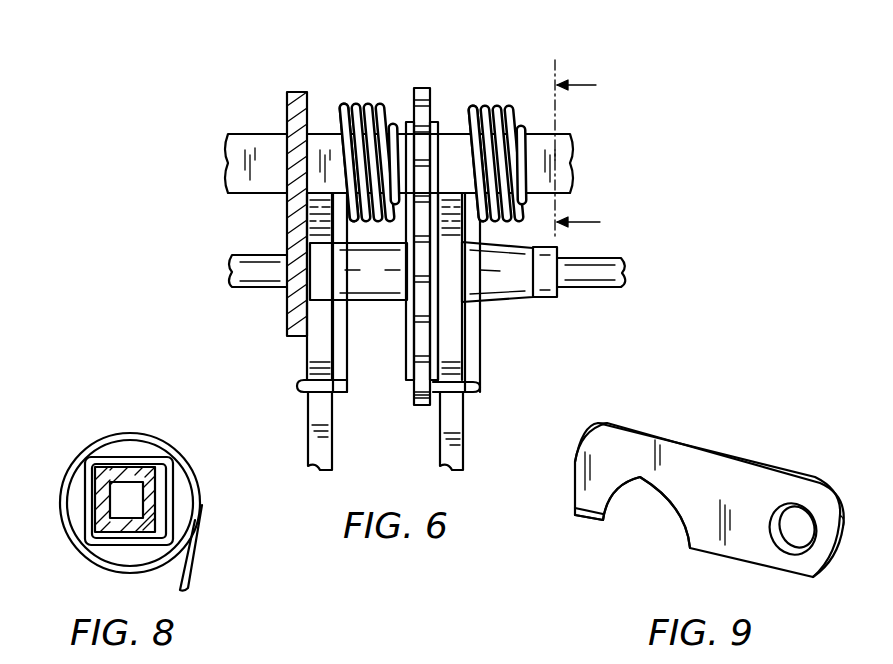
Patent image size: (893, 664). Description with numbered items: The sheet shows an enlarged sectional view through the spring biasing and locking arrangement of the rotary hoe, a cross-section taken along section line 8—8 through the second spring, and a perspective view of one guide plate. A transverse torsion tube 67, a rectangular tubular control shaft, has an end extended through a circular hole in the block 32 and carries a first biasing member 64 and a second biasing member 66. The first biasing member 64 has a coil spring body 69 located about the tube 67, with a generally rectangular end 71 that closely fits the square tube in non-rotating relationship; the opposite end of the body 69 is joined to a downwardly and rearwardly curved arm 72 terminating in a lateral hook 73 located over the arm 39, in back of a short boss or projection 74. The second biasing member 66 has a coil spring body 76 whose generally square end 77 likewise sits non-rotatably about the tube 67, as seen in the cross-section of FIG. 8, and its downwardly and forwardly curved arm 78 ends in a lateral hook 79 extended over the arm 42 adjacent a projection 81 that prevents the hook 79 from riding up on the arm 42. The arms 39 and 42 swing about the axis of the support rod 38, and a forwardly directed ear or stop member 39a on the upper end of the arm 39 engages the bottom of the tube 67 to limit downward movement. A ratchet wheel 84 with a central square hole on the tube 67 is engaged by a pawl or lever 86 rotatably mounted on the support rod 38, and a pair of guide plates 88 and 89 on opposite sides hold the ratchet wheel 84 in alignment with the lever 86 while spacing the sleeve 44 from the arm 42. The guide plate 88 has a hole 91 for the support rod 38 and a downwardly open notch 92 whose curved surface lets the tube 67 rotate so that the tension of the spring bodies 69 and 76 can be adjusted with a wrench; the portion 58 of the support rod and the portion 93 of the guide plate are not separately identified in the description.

In FIG. 6, the section line 8— 8 is at (584, 149).
In FIG. 6, the block 32 is at (295, 100).
In FIG. 6, the support rod 38 is at (592, 272).
In FIG. 6, the arm 39 is at (322, 438).
In FIG. 6, the ear or stop member 39a is at (312, 213).
In FIG. 6, the arm 42 is at (448, 436).
In FIG. 6, the sleeve 44 is at (374, 276).
In FIG. 6, the tapered portion 58 is at (500, 276).
In FIG. 6, the first biasing member 64 is at (360, 92).
In FIG. 6, the second biasing member 66 is at (490, 92).
In FIG. 6, the torsion tube 67 is at (248, 158).
In FIG. 8, the torsion tube 67 is at (113, 480).
In FIG. 6, the coil spring body 69 is at (344, 104).
In FIG. 6, the end of coil spring body 71 is at (393, 110).
In FIG. 6, the arm 72 is at (342, 352).
In FIG. 6, the lateral hook 73 is at (305, 386).
In FIG. 6, the boss or projection 74 is at (318, 372).
In FIG. 6, the coil spring body 76 is at (473, 104).
In FIG. 8, the coil spring body 76 is at (62, 494).
In FIG. 6, the square end 77 is at (519, 126).
In FIG. 8, the square end 77 is at (133, 462).
In FIG. 6, the arm 78 is at (470, 346).
In FIG. 8, the arm 78 is at (186, 568).
In FIG. 6, the lateral hook 79 is at (470, 390).
In FIG. 6, the projection 81 is at (452, 374).
In FIG. 6, the ratchet wheel 84 is at (421, 86).
In FIG. 6, the pawl or lever 86 is at (420, 400).
In FIG. 6, the guide plate 88 is at (409, 120).
In FIG. 9, the guide plate 88 is at (703, 467).
In FIG. 6, the guide plate 89 is at (434, 120).
In FIG. 9, the hole 91 is at (822, 534).
In FIG. 9, the notch 92 is at (652, 507).
In FIG. 9, the plate end 93 is at (592, 500).